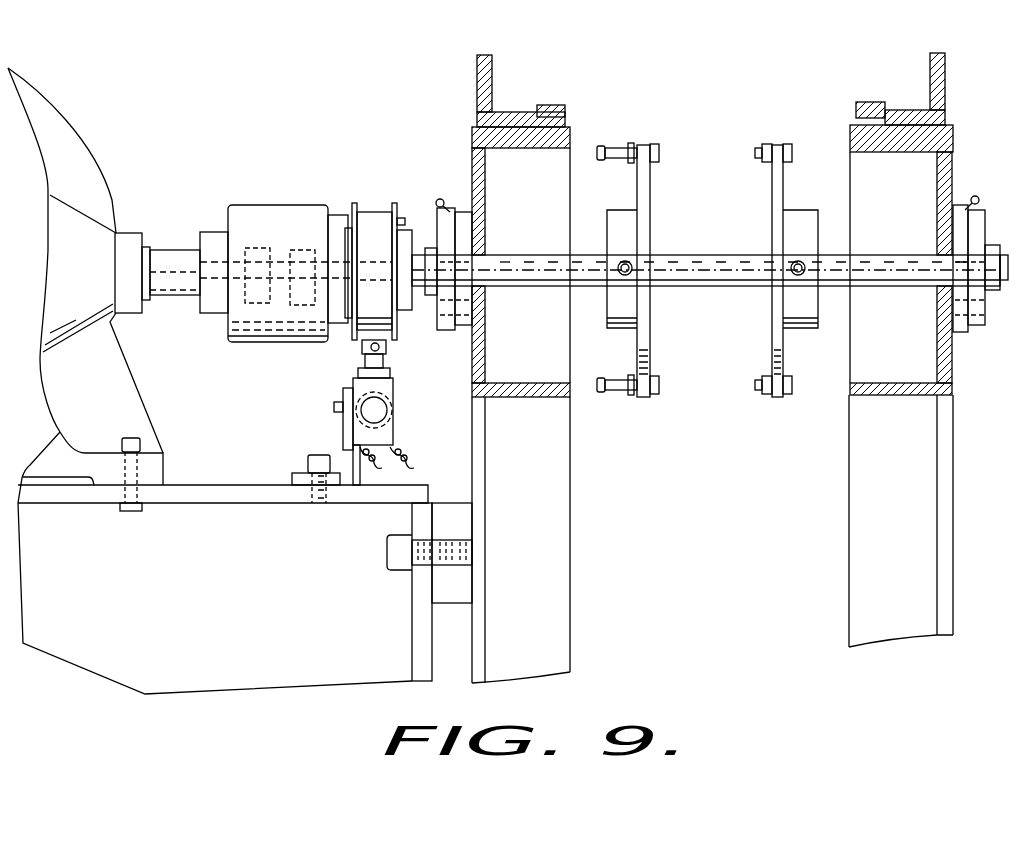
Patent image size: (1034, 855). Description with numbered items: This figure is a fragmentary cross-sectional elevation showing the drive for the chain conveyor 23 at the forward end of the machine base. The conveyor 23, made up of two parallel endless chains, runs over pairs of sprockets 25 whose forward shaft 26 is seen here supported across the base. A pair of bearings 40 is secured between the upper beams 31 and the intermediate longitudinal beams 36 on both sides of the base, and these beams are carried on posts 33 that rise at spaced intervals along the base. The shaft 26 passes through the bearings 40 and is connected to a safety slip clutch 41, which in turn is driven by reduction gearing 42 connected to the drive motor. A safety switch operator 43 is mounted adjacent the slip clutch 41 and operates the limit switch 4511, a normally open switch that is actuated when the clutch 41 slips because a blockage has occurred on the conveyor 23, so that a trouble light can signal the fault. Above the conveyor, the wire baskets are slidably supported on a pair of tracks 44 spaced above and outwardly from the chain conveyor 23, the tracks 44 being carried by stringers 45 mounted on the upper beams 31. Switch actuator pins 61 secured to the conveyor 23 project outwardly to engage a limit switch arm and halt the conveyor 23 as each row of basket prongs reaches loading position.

The endless chain conveyor 23 is at (763, 397).
The sprockets 25 is at (767, 177).
The shaft 26 is at (688, 255).
The upper beams 31 is at (522, 152).
The posts 33 is at (558, 515).
The intermediate longitudinal beams 36 is at (522, 397).
The bearings 40 is at (470, 210).
The safety slip clutch 41 is at (263, 213).
The reduction gearing 42 is at (88, 153).
The safety switch operator 43 is at (365, 212).
The tracks 44 is at (552, 105).
The stringers 45 is at (490, 75).
The switch actuator 61 is at (615, 145).
The limit switch LS11 4511 is at (395, 388).